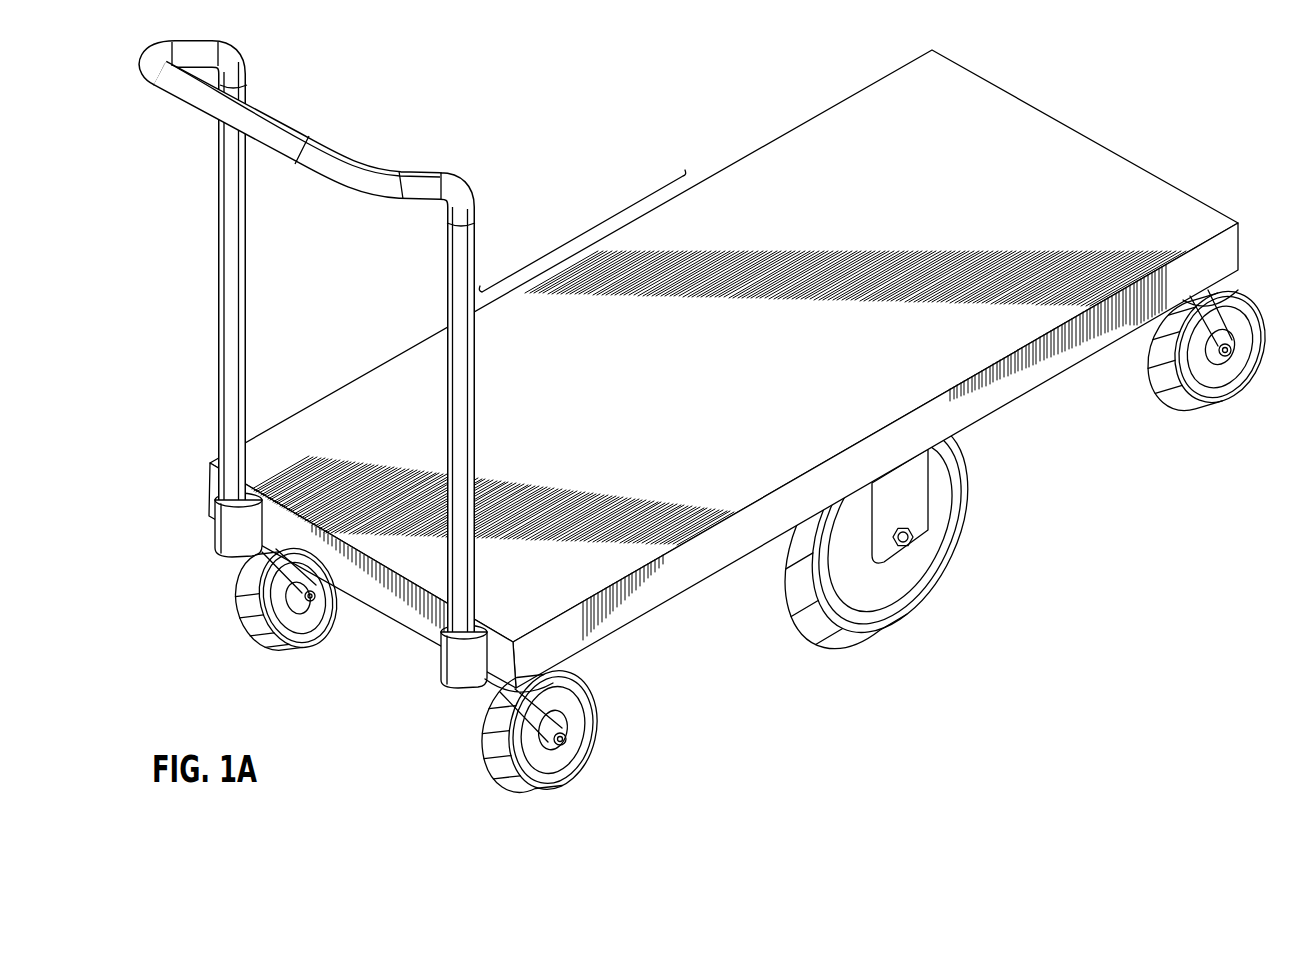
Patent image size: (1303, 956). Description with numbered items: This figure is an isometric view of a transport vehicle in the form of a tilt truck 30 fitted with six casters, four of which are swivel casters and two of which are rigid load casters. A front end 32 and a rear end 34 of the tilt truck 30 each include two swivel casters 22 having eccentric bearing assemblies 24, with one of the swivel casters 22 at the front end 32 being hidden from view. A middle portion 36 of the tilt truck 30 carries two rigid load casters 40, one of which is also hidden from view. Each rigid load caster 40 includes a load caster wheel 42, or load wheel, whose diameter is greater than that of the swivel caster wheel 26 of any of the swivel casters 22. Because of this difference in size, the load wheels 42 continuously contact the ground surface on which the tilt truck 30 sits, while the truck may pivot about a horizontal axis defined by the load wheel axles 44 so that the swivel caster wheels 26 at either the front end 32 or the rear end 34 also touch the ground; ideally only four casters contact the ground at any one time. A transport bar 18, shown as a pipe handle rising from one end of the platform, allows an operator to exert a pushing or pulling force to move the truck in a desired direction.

The transport bar 18 is at (142, 47).
The swivel casters 22 is at (734, 538).
The eccentric bearing assemblies 24 is at (487, 686).
The swivel caster wheel 26 is at (289, 648).
The tilt truck 30 is at (700, 417).
The front end 32 is at (1142, 165).
The rear end 34 is at (397, 613).
The middle portion 36 is at (587, 232).
The rigid load casters 40 is at (880, 535).
The load caster wheel 42 is at (893, 618).
The load wheel axles 44 is at (914, 538).